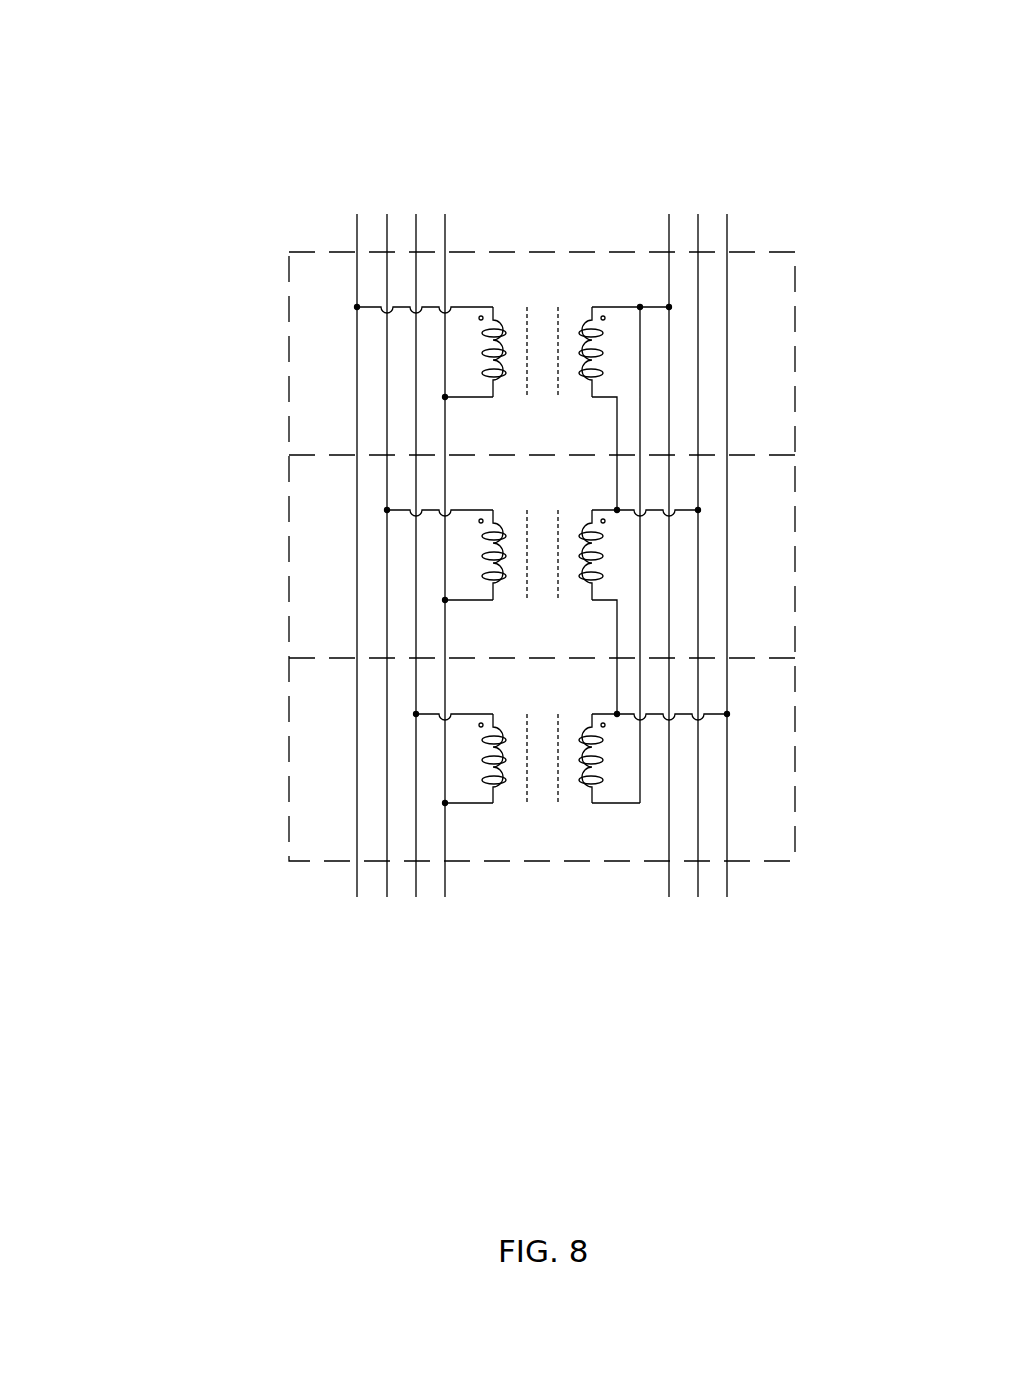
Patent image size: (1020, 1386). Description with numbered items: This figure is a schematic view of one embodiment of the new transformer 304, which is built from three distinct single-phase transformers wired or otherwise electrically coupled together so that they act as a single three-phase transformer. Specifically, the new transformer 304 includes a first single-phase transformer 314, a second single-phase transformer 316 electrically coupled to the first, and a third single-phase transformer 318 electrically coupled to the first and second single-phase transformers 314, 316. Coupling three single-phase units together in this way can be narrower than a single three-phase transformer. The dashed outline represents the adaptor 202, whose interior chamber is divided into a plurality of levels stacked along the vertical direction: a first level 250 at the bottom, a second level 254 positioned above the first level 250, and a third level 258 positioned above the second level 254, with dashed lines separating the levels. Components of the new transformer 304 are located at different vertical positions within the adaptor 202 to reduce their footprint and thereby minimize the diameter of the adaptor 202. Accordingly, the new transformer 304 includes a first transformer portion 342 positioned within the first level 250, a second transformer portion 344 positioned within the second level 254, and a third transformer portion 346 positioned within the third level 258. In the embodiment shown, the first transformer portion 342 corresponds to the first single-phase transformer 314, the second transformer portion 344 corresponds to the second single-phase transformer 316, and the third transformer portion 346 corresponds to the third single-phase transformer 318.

The new transformer 304 is at (150, 66).
The adaptor 202 is at (288, 555).
The third single-phase transformer 318 is at (523, 282).
The third transformer portion 346 is at (555, 295).
The first single-phase transformer 314 is at (543, 818).
The third level 258 is at (617, 288).
The second level 254 is at (506, 491).
The first level 250 is at (640, 848).
The second transformer portion 344 is at (456, 559).
The second single-phase transformer 316 is at (627, 563).
The first transformer portion 342 is at (491, 810).